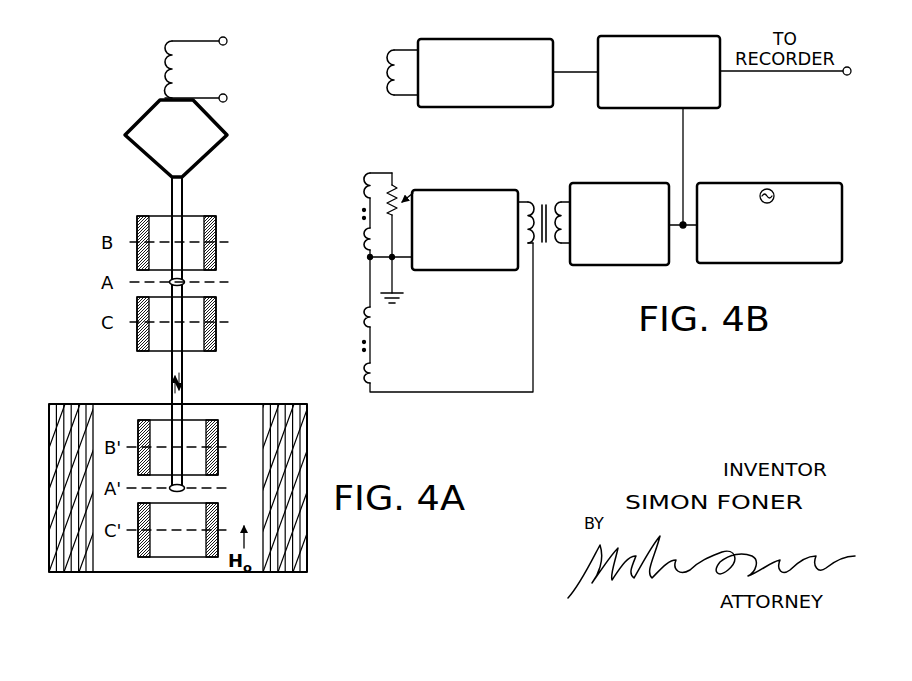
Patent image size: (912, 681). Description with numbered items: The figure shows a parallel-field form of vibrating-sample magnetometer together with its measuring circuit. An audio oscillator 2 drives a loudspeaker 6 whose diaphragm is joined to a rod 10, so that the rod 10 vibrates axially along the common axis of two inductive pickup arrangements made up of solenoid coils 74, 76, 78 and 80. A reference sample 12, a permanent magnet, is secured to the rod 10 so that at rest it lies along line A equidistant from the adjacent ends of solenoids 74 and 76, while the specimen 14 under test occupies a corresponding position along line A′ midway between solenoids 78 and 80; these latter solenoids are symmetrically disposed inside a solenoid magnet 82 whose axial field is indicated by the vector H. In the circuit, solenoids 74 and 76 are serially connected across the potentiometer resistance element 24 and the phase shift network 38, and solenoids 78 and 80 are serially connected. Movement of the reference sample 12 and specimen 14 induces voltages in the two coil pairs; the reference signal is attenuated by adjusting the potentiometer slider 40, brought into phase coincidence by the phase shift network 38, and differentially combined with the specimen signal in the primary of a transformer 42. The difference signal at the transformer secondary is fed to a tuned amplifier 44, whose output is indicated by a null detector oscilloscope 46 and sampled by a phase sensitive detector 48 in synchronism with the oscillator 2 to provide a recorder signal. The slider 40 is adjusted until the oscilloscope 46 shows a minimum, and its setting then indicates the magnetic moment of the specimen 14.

In FIG. 4B, the audio oscillator 2 is at (478, 112).
In FIG. 4A, the loudspeaker 6 is at (145, 118).
In FIG. 4A, the rod 10 is at (184, 195).
In FIG. 4A, the reference sample 12 is at (186, 281).
In FIG. 4A, the specimen 14 is at (186, 488).
In FIG. 4B, the potentiometer resistance element 24 is at (397, 195).
In FIG. 4B, the phase shift network 38 is at (476, 273).
In FIG. 4B, the potentiometer slider 40 is at (414, 188).
In FIG. 4B, the transformer 42 is at (546, 200).
In FIG. 4B, the tuned amplifier 44 is at (605, 267).
In FIG. 4B, the null detector oscilloscope 46 is at (768, 265).
In FIG. 4B, the phase sensitive detector 48 is at (632, 110).
In FIG. 4A, the solenoid coil 74 is at (218, 227).
In FIG. 4B, the solenoid coil 74 is at (361, 186).
In FIG. 4A, the solenoid coil 76 is at (218, 308).
In FIG. 4B, the solenoid coil 76 is at (361, 244).
In FIG. 4A, the solenoid coil 78 is at (218, 430).
In FIG. 4B, the solenoid coil 78 is at (362, 316).
In FIG. 4A, the solenoid coil 80 is at (138, 541).
In FIG. 4B, the solenoid coil 80 is at (362, 369).
In FIG. 4A, the solenoid magnet 82 is at (307, 437).